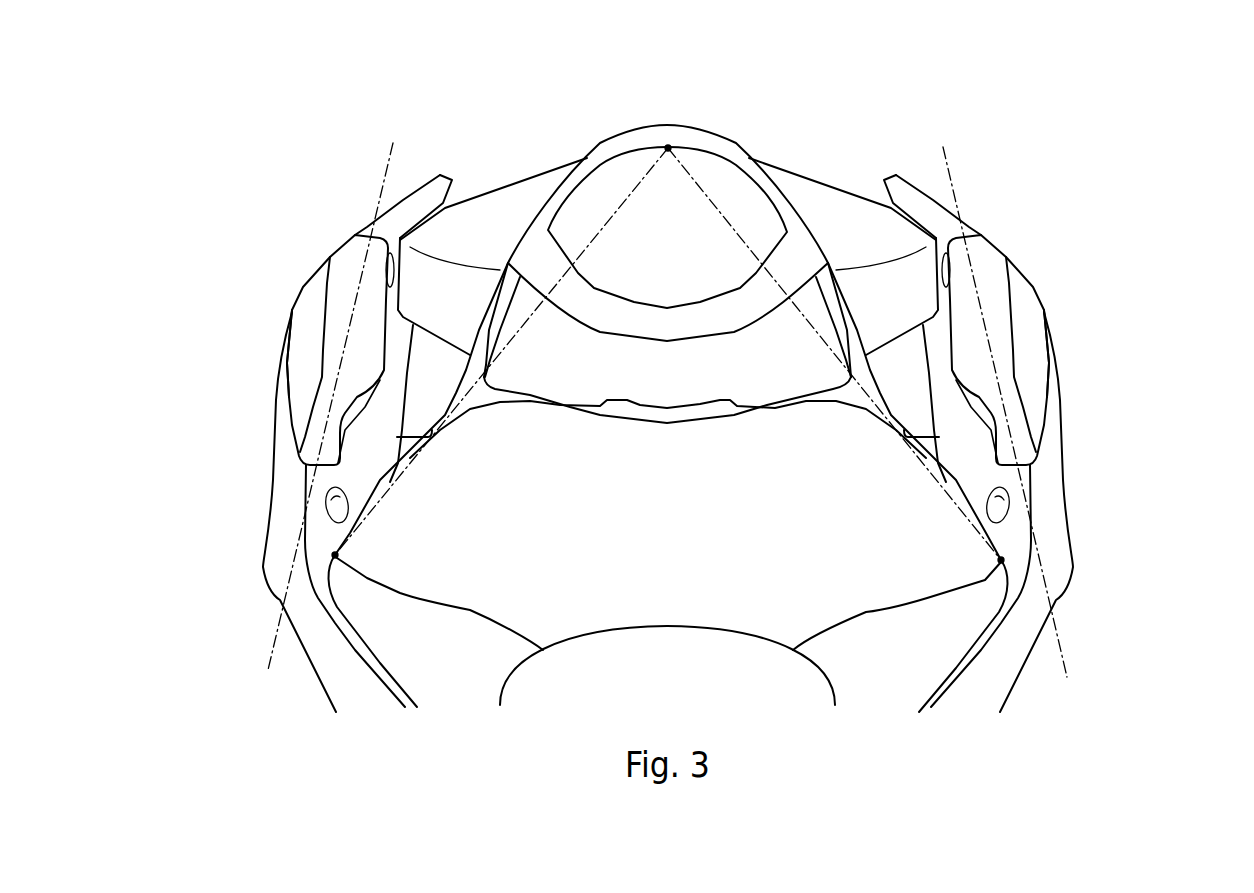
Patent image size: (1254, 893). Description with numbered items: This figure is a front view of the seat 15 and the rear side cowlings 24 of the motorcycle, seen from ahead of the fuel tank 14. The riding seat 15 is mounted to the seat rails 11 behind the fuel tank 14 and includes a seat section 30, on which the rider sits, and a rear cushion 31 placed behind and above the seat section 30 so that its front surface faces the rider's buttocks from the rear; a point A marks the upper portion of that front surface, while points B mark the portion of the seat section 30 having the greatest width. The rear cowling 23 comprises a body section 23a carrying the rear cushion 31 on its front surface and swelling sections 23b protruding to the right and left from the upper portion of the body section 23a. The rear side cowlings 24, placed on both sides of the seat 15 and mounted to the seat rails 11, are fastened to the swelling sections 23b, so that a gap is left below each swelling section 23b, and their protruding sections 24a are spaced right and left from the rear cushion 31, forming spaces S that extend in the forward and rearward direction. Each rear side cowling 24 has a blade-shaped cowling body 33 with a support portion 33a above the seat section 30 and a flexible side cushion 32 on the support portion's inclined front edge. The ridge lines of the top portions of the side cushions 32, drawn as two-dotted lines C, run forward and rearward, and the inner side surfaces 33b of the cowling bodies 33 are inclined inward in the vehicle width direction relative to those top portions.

The seat rails 11 is at (342, 595).
The fuel tank 14 is at (833, 683).
The riding seat 15 is at (942, 595).
The rear cowling 23 is at (815, 183).
The body section 23a is at (672, 123).
The swelling sections 23b is at (500, 195).
The rear side cowlings 24 is at (277, 391).
The protruding sections 24a is at (162, 193).
The seat section 30 is at (423, 572).
The rear cushion 31 is at (703, 143).
The side cushion 32 is at (317, 287).
The cowling body 33 is at (267, 487).
The support portion 33a is at (285, 347).
The inner side surfaces 33b is at (353, 468).
The point A is at (667, 147).
The points B is at (335, 555).
The two-dotted lines C is at (667, 396).
The spaces S is at (430, 367).